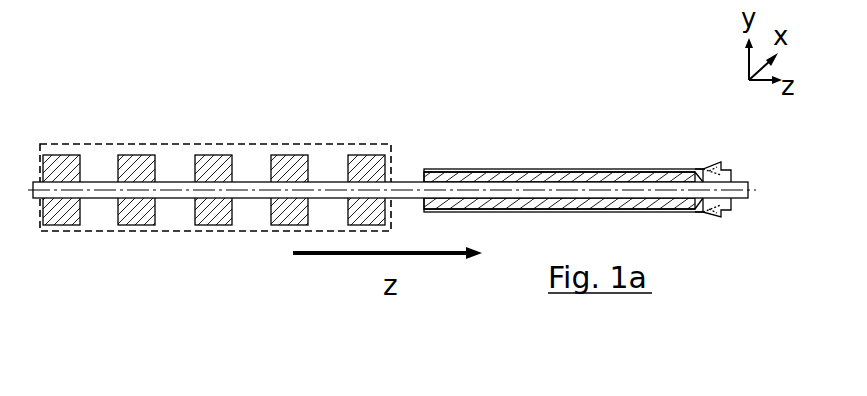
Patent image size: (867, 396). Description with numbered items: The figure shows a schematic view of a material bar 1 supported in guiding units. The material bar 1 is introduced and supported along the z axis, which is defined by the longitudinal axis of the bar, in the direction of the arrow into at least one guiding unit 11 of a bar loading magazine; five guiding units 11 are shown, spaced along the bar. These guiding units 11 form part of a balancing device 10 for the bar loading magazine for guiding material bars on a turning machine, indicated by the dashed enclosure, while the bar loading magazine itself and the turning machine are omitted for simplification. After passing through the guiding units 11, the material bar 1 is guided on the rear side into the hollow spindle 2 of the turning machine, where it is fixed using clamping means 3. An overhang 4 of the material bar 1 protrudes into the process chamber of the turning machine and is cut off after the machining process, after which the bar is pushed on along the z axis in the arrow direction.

The material bar 1 is at (183, 190).
The hollow spindle 2 is at (568, 172).
The clamping means 3 is at (645, 170).
The overhang 4 is at (738, 182).
The balancing device 10 is at (386, 147).
The guiding unit 11 is at (62, 165).